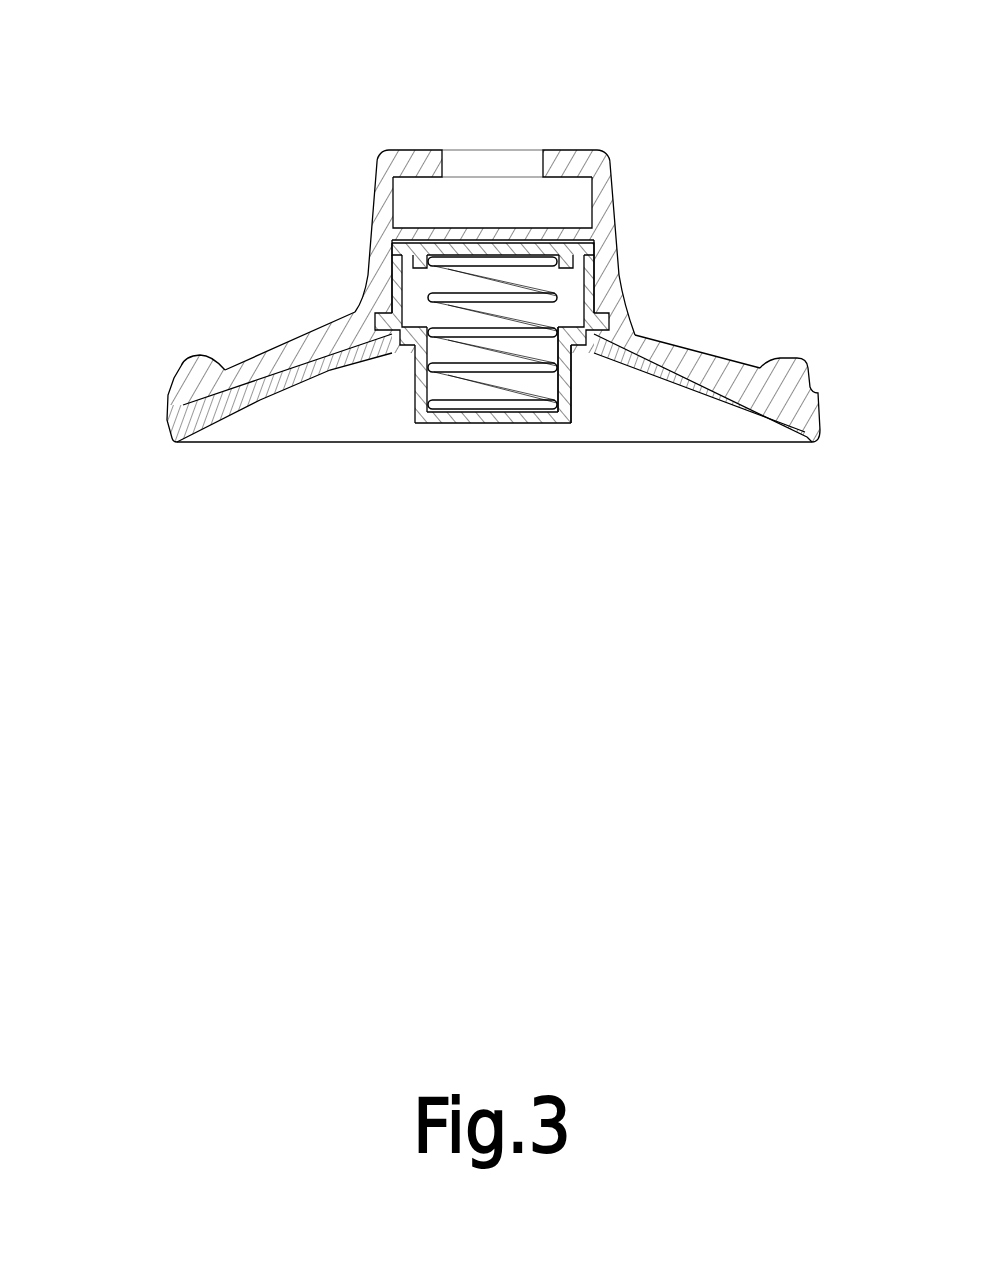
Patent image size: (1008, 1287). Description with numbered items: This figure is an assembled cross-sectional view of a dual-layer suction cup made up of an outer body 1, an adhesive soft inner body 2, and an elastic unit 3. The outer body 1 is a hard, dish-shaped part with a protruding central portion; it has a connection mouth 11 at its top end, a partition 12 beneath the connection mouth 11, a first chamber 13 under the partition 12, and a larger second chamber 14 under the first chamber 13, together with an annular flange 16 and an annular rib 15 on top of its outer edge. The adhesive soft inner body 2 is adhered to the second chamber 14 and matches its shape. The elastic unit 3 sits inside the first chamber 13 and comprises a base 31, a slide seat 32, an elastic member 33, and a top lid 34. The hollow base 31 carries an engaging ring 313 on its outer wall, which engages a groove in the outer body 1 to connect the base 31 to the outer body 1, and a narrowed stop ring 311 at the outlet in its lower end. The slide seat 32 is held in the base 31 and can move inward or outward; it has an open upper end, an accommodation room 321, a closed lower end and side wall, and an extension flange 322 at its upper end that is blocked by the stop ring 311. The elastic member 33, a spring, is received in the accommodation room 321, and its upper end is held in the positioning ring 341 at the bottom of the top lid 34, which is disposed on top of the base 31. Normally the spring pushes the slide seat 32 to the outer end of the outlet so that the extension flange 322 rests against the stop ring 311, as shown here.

The outer body 1 is at (588, 160).
The connection mouth 11 is at (477, 207).
The partition 12 is at (423, 232).
The first chamber 13 is at (573, 295).
The second chamber 14 is at (705, 415).
The annular rib 15 is at (193, 363).
The annular flange 16 is at (173, 423).
The adhesive soft inner body 2 is at (783, 412).
The elastic unit 3 is at (398, 410).
The base 31 is at (393, 343).
The stop ring 311 is at (578, 352).
The engaging ring 313 is at (387, 302).
The slide seat 32 is at (442, 417).
The accommodation room 321 is at (542, 385).
The extension flange 322 is at (597, 340).
The elastic member 33 is at (497, 370).
The top lid 34 is at (528, 250).
The positioning ring 341 is at (565, 263).